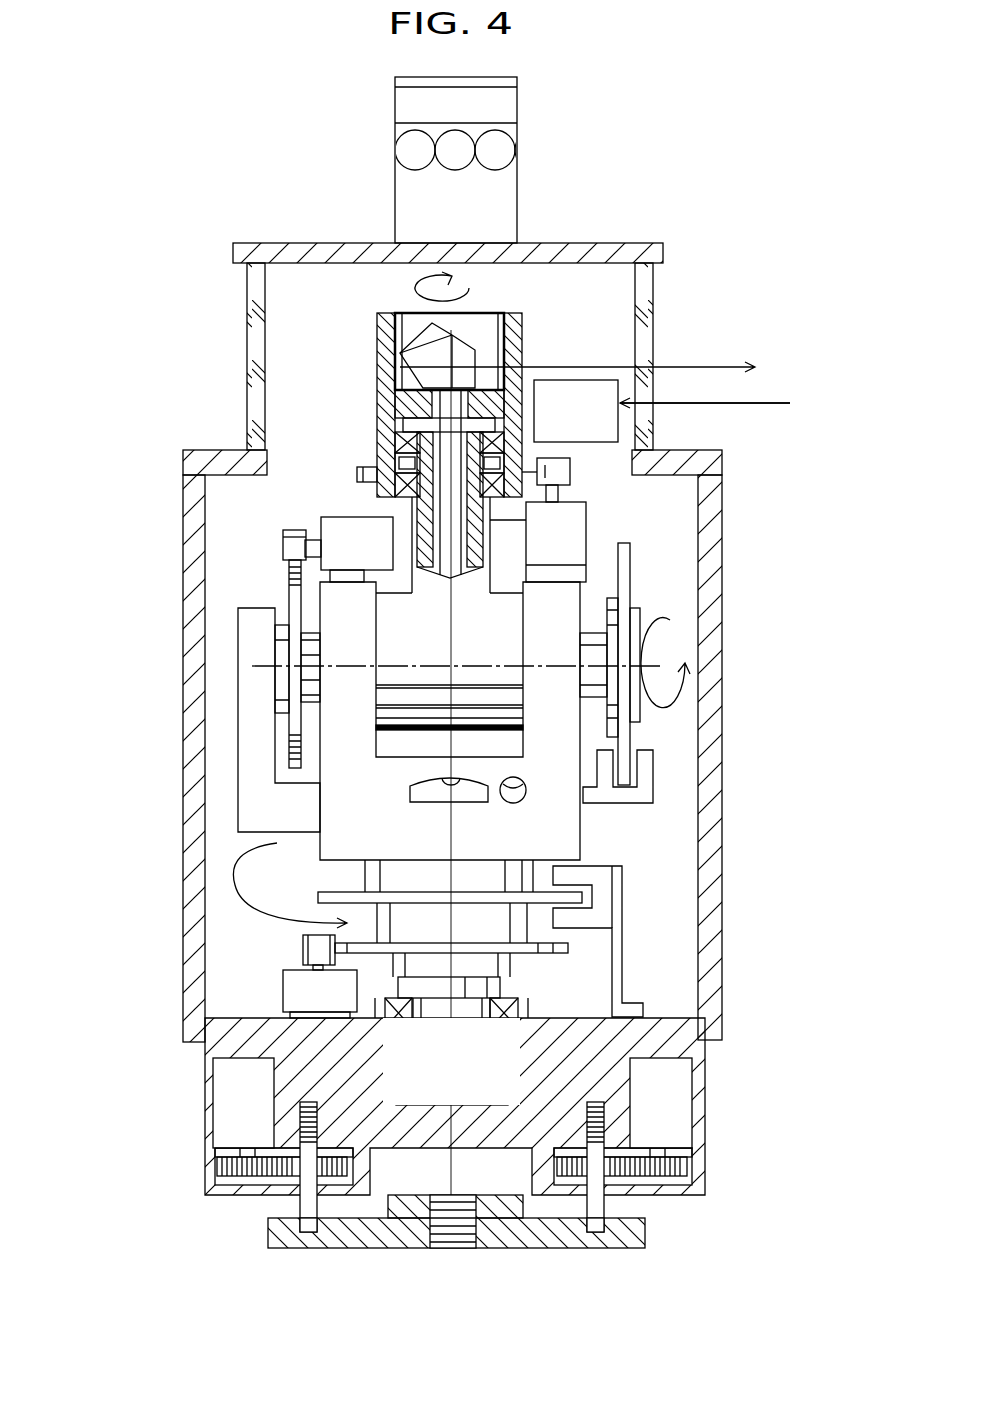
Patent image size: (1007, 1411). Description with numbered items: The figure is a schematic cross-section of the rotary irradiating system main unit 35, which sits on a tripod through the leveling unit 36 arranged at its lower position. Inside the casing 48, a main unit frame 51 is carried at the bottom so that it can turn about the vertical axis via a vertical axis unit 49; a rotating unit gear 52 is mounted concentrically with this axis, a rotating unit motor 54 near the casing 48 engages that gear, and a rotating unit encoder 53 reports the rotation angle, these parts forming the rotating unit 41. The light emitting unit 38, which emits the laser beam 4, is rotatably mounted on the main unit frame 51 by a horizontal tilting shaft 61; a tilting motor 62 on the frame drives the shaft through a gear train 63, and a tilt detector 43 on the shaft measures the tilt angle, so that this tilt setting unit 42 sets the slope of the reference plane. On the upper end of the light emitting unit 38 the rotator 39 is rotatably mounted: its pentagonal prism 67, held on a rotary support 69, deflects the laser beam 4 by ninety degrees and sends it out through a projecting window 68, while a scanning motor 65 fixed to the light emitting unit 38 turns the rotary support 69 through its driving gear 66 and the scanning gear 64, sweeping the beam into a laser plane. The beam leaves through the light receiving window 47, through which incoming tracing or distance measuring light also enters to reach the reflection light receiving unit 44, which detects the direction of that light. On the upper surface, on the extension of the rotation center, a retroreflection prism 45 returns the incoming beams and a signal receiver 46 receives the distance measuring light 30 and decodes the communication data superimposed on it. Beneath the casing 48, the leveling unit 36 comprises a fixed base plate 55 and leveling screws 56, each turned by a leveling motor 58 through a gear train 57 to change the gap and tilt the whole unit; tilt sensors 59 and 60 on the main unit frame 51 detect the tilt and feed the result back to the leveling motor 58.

The laser beam 4 is at (695, 365).
The distance measuring light beam 30 is at (745, 403).
The rotary irradiating system main unit 35 is at (752, 718).
The leveling unit 36 is at (735, 1100).
The light emitting unit 38 is at (400, 632).
The rotator 39 is at (365, 367).
The rotating unit 41 is at (260, 945).
The tilt setting unit 42 is at (222, 592).
The tilt detector 43 is at (664, 746).
The reflection light receiving unit 44 is at (560, 397).
The retroreflection prism 45 is at (517, 152).
The signal receiver 46 is at (407, 102).
The light receiving window 47 is at (645, 327).
The casing 48 is at (197, 842).
The vertical axis unit 49 is at (443, 1075).
The main unit frame 51 is at (348, 810).
The rotating unit gear 52 is at (523, 952).
The rotating unit encoder 53 is at (593, 873).
The rotating unit motor 54 is at (298, 983).
The fixed base plate 55 is at (640, 1222).
The leveling screw 56 is at (300, 1200).
The gear train 57 is at (236, 1180).
The leveling motor 58 is at (233, 1102).
The tilt sensor 59 is at (418, 790).
The tilt sensor 60 is at (520, 803).
The horizontal tilting shaft 61 is at (598, 652).
The tilting motor 62 is at (355, 525).
The gear train 63 is at (292, 612).
The scanning gear 64 is at (363, 465).
The scanning motor 65 is at (553, 537).
The driving gear 66 is at (572, 472).
The pentagonal prism 67 is at (423, 333).
The projecting window 68 is at (512, 352).
The rotary support 69 is at (380, 400).